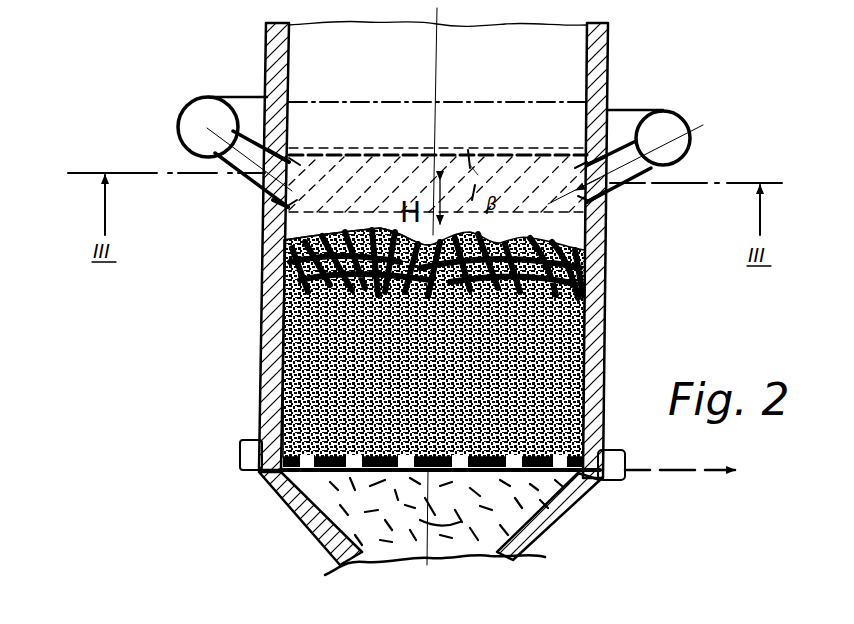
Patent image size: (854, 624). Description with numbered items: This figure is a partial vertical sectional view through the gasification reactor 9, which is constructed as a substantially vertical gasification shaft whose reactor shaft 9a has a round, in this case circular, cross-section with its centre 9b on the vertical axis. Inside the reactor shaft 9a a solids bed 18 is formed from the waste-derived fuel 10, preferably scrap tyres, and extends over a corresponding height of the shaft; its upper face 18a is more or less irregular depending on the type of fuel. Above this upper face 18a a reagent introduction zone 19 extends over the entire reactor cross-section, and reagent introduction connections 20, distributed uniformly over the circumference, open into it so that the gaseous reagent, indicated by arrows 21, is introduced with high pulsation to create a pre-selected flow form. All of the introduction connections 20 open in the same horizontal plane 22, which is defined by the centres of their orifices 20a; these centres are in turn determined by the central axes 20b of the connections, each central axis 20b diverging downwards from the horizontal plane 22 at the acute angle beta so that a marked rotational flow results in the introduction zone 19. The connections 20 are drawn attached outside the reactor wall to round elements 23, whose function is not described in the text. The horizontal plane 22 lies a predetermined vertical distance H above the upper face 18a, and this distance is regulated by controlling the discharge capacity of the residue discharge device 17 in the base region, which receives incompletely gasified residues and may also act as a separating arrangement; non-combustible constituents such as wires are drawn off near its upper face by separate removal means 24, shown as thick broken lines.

The gasification reactor 9 is at (613, 62).
The reactor shaft 9a is at (273, 282).
The centre of the reactor cross-section 9b is at (437, 68).
The waste-derived fuel 10 is at (585, 322).
The residue discharge device 17 is at (298, 513).
The solids bed 18 is at (283, 352).
The upper face of the solids bed 18a is at (282, 250).
The reagent introduction zone 19 is at (474, 166).
The reagent introduction connection 20 is at (242, 176).
The orifice 20a is at (301, 162).
The central axis 20b is at (229, 85).
The gaseous reagent 21 is at (255, 188).
The horizontal plane 22 is at (378, 176).
The supply ring 23 is at (181, 112).
The removal means 24 is at (678, 474).